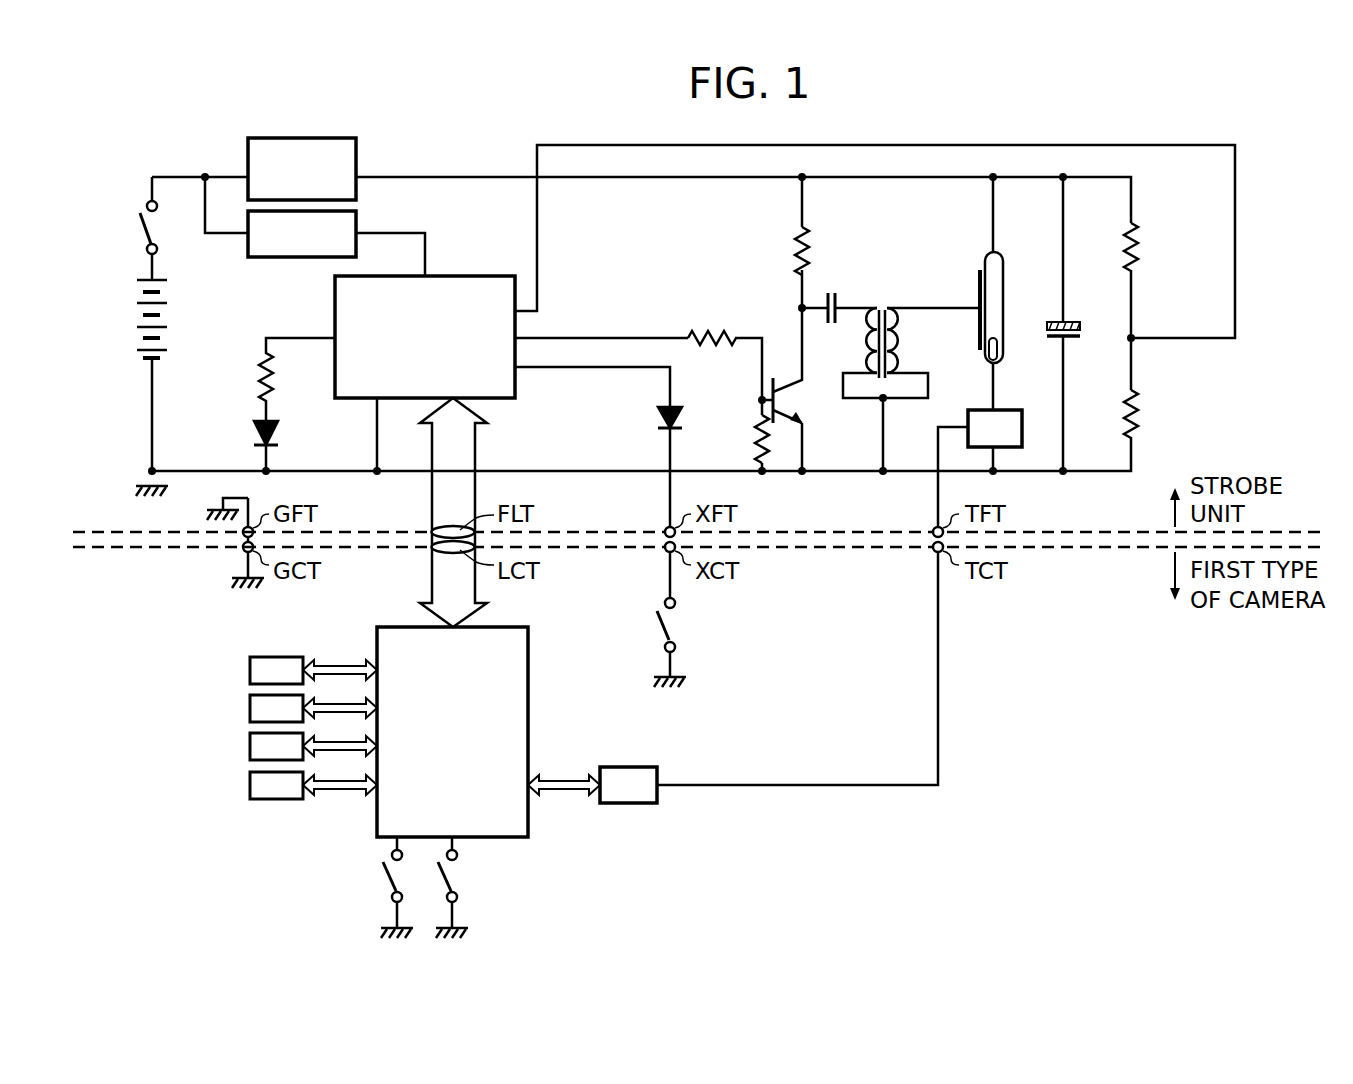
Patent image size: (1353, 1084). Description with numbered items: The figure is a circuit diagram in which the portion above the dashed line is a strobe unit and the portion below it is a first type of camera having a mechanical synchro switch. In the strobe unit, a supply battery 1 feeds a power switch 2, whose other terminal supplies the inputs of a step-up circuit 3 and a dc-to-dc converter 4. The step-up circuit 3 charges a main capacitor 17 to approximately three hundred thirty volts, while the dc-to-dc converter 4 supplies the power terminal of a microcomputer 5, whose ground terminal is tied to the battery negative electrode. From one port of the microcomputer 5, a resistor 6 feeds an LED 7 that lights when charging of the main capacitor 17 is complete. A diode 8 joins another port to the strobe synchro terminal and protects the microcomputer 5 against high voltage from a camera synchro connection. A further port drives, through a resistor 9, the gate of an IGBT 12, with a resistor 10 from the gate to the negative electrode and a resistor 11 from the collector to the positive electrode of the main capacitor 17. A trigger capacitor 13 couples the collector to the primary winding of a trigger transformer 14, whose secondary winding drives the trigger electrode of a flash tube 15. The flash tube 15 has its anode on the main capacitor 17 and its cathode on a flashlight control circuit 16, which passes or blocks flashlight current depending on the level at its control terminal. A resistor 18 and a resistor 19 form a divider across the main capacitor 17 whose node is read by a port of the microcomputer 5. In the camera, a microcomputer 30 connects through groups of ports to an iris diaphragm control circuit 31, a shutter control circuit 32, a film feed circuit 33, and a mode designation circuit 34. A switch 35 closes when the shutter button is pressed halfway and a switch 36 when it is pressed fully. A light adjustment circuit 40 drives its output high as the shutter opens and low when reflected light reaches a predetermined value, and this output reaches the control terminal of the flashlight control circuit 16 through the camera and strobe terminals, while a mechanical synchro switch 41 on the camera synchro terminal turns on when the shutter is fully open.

The supply battery 1 is at (133, 320).
The power switch 2 is at (158, 228).
The step-up circuit 3 is at (305, 138).
The dc-to-dc converter 4 is at (356, 216).
The microcomputer 5 is at (464, 276).
The resistor 6 is at (260, 370).
The light-emitting diode 7 is at (258, 434).
The diode 8 is at (658, 419).
The resistor 9 is at (716, 332).
The resistor 10 is at (756, 440).
The resistor 11 is at (794, 248).
The insulated-gate bipolar transistor 12 is at (806, 408).
The trigger capacitor 13 is at (833, 290).
The trigger transformer 14 is at (885, 307).
The flash tube 15 is at (1004, 283).
The flashlight control circuit 16 is at (1017, 408).
The main capacitor 17 is at (1074, 322).
The resistor 18 is at (1138, 252).
The resistor 19 is at (1138, 414).
The microcomputer 30 is at (528, 662).
The iris diaphragm control circuit 31 is at (250, 671).
The shutter control circuit 32 is at (250, 709).
The film feed circuit 33 is at (250, 747).
The mode designation circuit 34 is at (250, 785).
The switch 35 is at (386, 875).
The switch 36 is at (455, 873).
The light adjustment circuit 40 is at (625, 764).
The mechanical synchro switch 41 is at (674, 622).